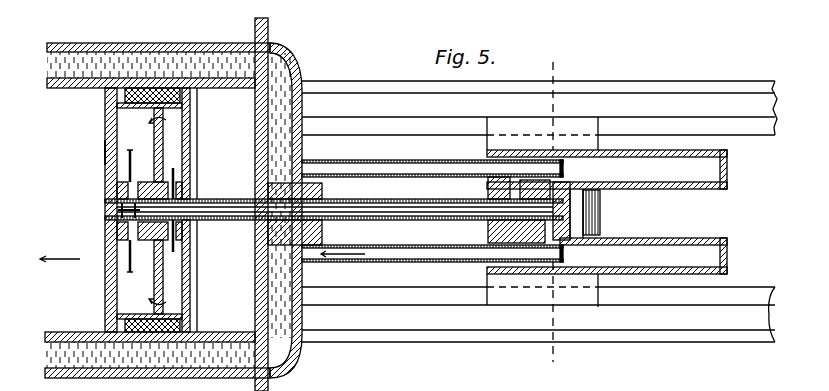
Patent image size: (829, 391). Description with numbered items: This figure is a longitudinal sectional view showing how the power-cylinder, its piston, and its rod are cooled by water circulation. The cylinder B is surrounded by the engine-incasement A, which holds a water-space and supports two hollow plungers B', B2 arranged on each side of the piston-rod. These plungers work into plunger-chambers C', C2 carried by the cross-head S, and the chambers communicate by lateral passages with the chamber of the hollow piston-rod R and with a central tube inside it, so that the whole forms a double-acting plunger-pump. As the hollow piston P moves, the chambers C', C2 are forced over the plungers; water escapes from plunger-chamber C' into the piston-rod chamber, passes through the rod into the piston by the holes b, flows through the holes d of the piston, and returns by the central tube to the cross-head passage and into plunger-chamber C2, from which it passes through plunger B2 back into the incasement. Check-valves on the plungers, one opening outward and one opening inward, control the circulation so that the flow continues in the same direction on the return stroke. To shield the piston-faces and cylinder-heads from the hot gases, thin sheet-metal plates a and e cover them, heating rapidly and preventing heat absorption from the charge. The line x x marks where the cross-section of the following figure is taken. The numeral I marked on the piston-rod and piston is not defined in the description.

The engine-incasement A is at (157, 208).
The sheet-metal plate e is at (256, 138).
The cross-head S is at (542, 209).
The section line x is at (547, 212).
The plunger-chamber C' is at (607, 169).
The plunger-chamber C2 is at (607, 256).
The hollow plunger B' is at (432, 159).
The hollow plunger B2 is at (432, 262).
The hollow piston-rod R is at (334, 211).
The piston I is at (105, 217).
The cylinder B is at (132, 210).
The sheet-metal plate a is at (105, 178).
The piston hole d is at (135, 211).
The piston-rod hole b is at (174, 211).
The hollow piston P is at (105, 152).